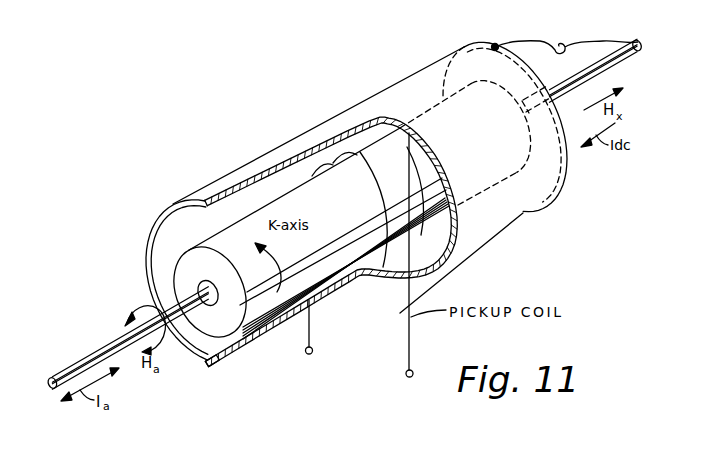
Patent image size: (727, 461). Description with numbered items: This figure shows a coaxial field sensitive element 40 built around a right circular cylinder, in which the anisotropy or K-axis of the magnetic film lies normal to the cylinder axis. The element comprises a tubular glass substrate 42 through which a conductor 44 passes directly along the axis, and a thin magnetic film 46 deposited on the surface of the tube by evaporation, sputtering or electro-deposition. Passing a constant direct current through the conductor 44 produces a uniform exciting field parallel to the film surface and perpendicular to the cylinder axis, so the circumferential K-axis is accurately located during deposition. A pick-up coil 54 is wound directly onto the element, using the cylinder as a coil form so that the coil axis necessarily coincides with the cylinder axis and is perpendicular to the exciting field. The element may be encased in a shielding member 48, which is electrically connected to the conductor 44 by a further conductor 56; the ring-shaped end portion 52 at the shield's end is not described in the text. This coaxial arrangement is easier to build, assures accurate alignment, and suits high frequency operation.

The field sensitive element 40 is at (181, 264).
The tubular glass substrate 42 is at (193, 277).
The conductor 44 is at (90, 354).
The thin magnetic film 46 is at (282, 170).
The shielding member 48 is at (226, 355).
The end ring 52 is at (567, 190).
The pick-up coil 54 is at (312, 323).
The conductor 56 is at (547, 42).